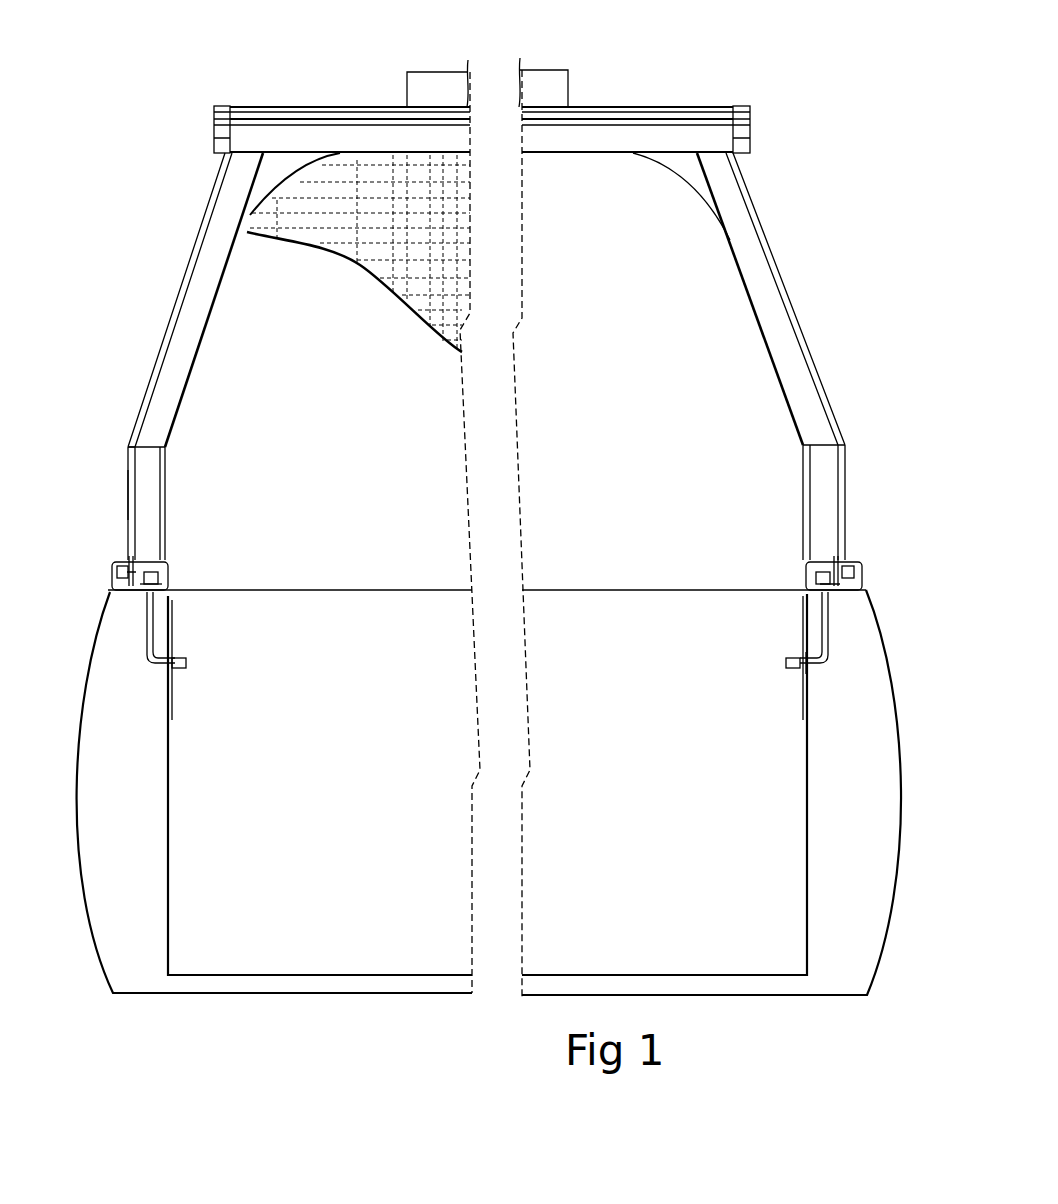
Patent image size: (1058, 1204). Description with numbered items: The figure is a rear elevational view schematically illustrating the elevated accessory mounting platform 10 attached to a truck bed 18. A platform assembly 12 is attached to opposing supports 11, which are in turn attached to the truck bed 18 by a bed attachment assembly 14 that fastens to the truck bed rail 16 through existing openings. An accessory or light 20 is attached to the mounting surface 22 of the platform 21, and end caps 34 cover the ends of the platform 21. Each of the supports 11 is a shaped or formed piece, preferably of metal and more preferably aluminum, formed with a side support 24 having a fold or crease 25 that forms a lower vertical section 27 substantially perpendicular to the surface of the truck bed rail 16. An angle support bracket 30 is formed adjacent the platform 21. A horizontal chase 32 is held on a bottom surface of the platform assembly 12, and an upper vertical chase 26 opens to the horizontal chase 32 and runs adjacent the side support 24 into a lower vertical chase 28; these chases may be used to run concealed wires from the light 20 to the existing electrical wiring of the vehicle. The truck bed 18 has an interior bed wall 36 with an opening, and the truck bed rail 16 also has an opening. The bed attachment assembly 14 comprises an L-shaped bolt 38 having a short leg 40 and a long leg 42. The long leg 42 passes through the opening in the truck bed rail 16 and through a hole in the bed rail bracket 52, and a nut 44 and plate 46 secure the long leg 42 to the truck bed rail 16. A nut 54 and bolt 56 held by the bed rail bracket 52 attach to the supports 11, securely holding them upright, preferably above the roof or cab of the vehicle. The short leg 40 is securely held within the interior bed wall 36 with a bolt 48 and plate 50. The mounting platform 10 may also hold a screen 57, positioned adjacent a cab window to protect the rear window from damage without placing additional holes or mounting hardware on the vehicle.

The elevated accessory mounting platform 10 is at (820, 266).
The supports 11 is at (206, 354).
The platform assembly 12 is at (718, 86).
The bed attachment assembly 14 is at (495, 546).
The truck bed rail 16 is at (866, 580).
The truck bed 18 is at (895, 666).
The light 20 is at (434, 72).
The platform 21 is at (615, 107).
The mounting surface 22 is at (334, 106).
The side support 24 is at (168, 350).
The fold or crease 25 is at (134, 440).
The upper vertical chase 26 is at (222, 274).
The lower vertical section 27 is at (126, 492).
The lower vertical chase 28 is at (150, 495).
The angle support bracket 30 is at (692, 178).
The horizontal chase 32 is at (580, 154).
The end caps 34 is at (212, 130).
The interior bed wall 36 is at (172, 782).
The L-shaped bolt 38 is at (463, 660).
The short leg 40 is at (152, 664).
The long leg 42 is at (148, 608).
The nut 44 is at (160, 582).
The plate 46 is at (170, 622).
The bolt 48 is at (176, 660).
The plate 50 is at (165, 674).
The bed rail bracket 52 is at (106, 580).
The nut 54 is at (118, 568).
The bolt 56 is at (130, 558).
The screen 57 is at (392, 284).